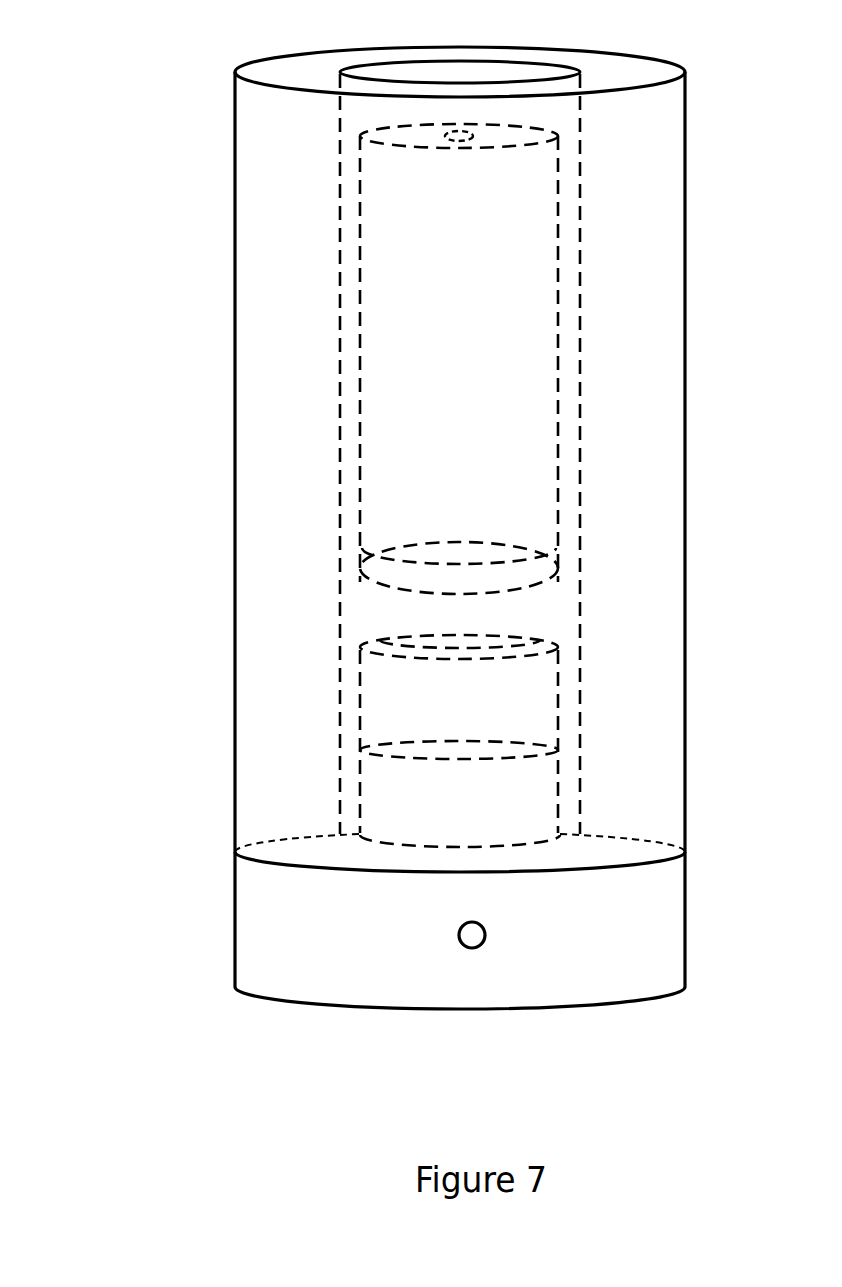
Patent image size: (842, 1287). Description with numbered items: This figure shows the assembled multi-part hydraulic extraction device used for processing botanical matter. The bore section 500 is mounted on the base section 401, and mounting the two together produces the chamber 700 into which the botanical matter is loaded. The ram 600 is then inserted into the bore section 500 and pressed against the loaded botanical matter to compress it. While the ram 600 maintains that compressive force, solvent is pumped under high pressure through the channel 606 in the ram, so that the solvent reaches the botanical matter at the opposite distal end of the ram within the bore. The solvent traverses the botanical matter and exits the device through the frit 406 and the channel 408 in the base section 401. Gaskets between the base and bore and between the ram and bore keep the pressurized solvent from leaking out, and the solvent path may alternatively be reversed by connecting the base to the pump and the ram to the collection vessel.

The base section 401 is at (630, 938).
The frit 406 is at (474, 636).
The channel 408 is at (455, 948).
The bore section 500 is at (260, 510).
The ram 600 is at (443, 253).
The channel 606 is at (453, 128).
The chamber 700 is at (385, 610).